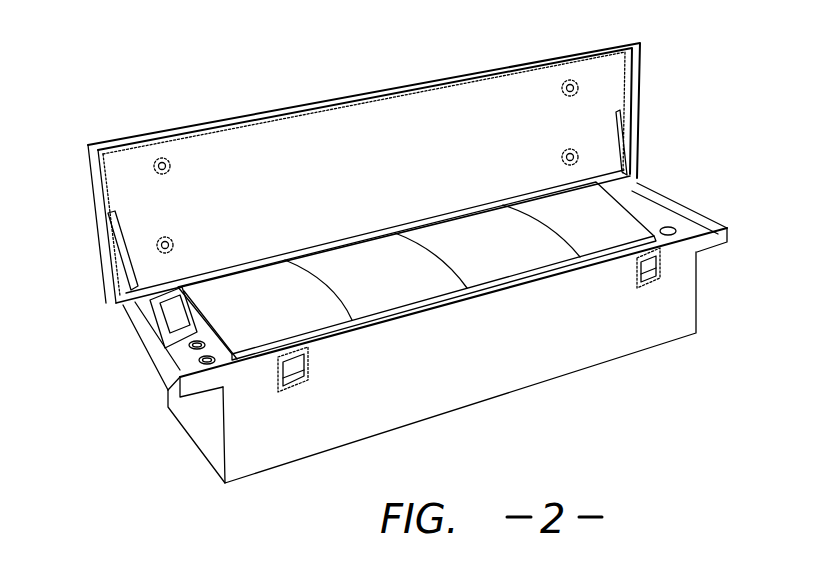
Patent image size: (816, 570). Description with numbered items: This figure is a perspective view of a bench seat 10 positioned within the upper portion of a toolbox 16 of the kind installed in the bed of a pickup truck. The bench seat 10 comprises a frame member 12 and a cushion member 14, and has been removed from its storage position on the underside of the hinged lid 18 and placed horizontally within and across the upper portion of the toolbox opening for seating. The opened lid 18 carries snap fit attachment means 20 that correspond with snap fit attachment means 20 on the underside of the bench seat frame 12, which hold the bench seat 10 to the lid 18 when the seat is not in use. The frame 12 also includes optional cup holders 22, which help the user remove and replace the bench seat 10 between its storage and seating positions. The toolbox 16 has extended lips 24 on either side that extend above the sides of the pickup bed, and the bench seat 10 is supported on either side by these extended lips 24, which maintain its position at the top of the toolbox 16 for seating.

The bench seat 10 is at (418, 255).
The frame member 12 is at (187, 344).
The cushion member 14 is at (308, 317).
The toolbox 16 is at (637, 332).
The lid 18 is at (375, 127).
The snap fit attachment means 20 is at (163, 158).
The cup holders 22 is at (198, 361).
The extended lips 24 is at (730, 231).